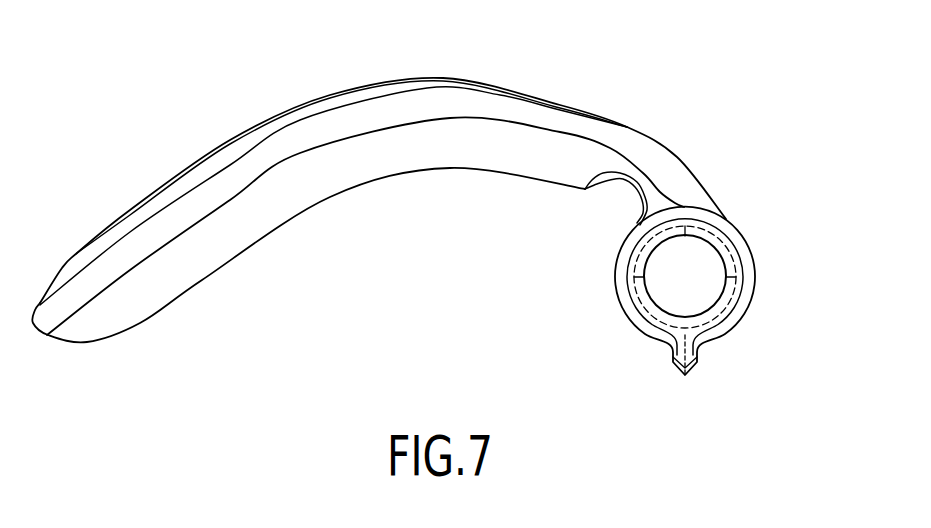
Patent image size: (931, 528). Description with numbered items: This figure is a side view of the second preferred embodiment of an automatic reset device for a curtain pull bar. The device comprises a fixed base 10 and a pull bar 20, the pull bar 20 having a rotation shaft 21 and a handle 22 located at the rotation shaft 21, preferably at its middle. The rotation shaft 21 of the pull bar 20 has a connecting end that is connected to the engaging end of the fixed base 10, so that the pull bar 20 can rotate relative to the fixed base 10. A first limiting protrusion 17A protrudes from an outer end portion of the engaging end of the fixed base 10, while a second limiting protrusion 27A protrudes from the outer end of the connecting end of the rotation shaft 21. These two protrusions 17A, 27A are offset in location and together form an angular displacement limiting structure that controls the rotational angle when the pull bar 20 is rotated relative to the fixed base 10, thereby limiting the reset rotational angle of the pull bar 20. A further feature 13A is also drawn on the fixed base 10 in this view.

The pull bar 20 is at (410, 175).
The handle 22 is at (445, 98).
The rotation shaft 21 is at (705, 222).
The fixed base 10 is at (677, 286).
The second limiting protrusion 27A is at (718, 240).
The first limiting protrusion 17A is at (643, 258).
The protrusion 13A is at (673, 352).